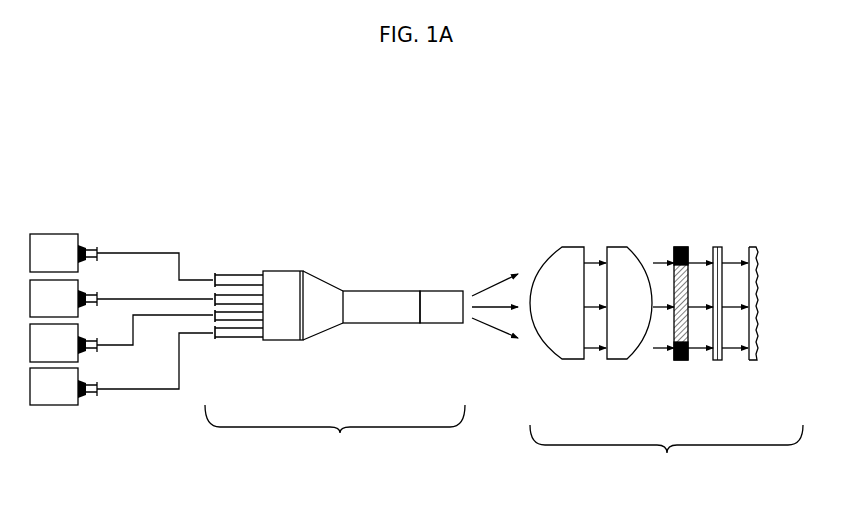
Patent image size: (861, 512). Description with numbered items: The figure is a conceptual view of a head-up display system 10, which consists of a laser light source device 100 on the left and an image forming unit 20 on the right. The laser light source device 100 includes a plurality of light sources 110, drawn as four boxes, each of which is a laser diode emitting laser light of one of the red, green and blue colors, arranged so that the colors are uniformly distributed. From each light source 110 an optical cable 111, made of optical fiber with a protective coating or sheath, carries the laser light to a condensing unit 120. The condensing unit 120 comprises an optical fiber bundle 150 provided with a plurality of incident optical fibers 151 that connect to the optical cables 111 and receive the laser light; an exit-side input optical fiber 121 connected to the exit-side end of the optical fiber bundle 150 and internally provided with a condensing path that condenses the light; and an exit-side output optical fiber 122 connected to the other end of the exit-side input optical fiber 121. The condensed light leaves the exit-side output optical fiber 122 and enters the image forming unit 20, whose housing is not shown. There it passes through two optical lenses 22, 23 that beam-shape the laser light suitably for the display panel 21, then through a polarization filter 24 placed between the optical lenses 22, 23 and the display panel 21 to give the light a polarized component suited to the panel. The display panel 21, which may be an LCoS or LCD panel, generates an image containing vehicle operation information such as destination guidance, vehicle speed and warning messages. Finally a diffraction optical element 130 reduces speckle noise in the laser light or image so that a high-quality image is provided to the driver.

The head-up display system 10 is at (106, 122).
The laser light source device 100 is at (284, 228).
The light sources 110 is at (53, 244).
The optical cable 111 is at (153, 252).
The incident optical fibers 151 is at (256, 341).
The optical fiber bundle 150 is at (318, 334).
The exit-side input optical fiber 121 is at (382, 326).
The exit-side output optical fiber 122 is at (447, 326).
The condensing unit 120 is at (335, 439).
The optical lens 22 is at (574, 356).
The optical lens 23 is at (618, 354).
The polarization filter 24 is at (681, 245).
The display panel 21 is at (716, 362).
The diffraction optical element 130 is at (753, 361).
The image forming unit 20 is at (666, 459).